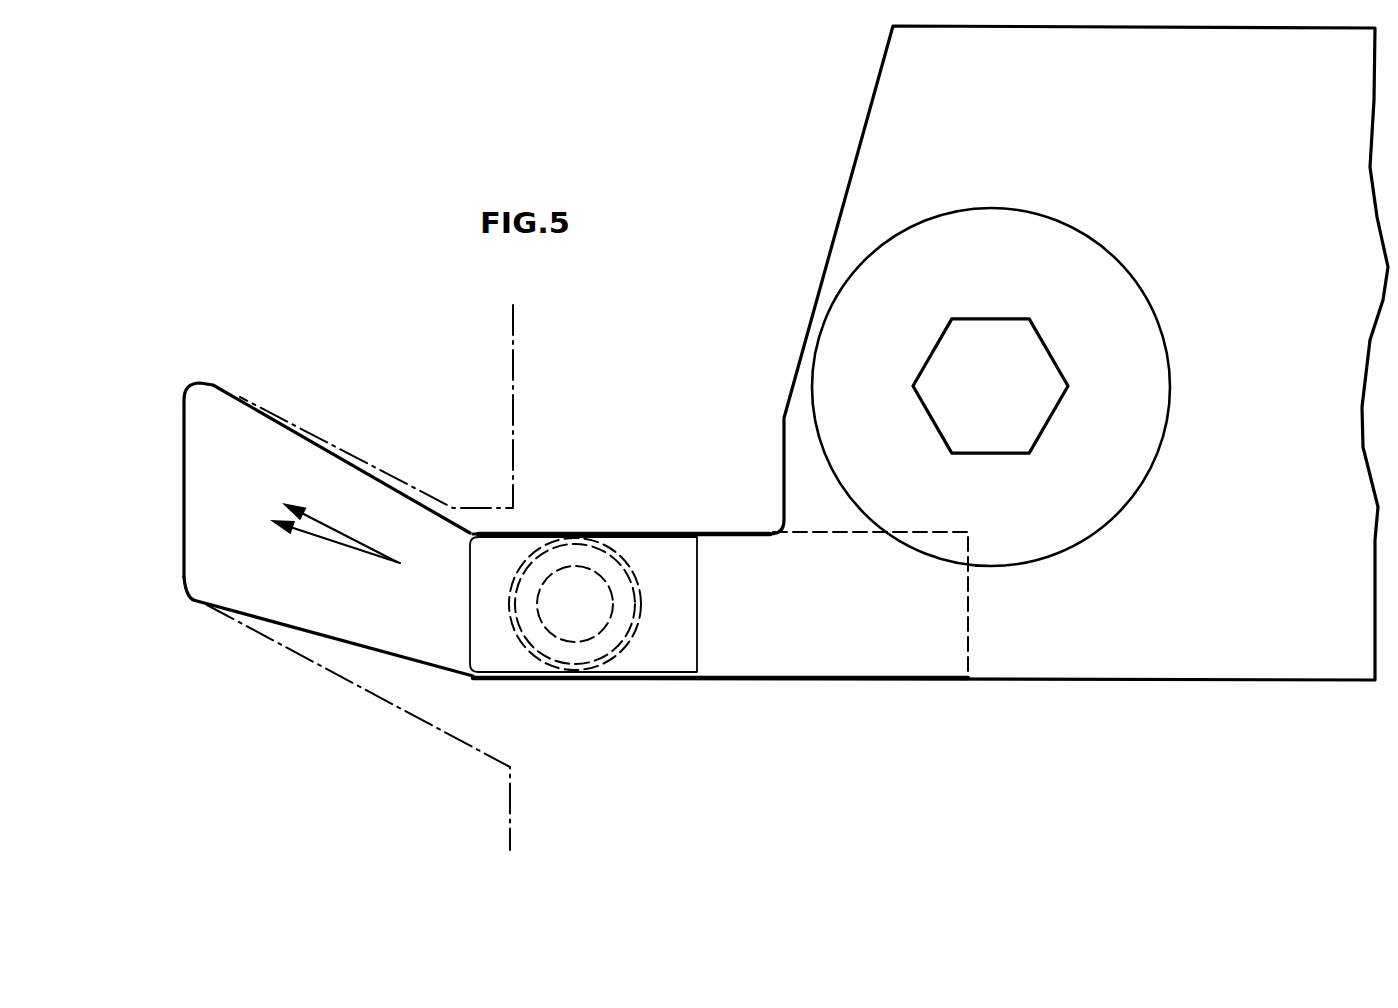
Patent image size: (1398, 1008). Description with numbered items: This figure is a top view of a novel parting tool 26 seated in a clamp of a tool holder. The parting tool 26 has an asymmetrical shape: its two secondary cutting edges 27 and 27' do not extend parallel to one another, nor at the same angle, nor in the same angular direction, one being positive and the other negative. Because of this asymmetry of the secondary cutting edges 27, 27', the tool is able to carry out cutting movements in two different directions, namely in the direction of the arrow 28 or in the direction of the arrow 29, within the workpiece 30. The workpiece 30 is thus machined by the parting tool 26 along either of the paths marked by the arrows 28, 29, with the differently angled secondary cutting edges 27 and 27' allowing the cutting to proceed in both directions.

The parting tool 26 is at (443, 552).
The secondary cutting edge 27 is at (411, 406).
The secondary cutting edge 27' is at (358, 727).
The arrow 28 is at (320, 538).
The arrow 29 is at (372, 555).
The workpiece 30 is at (383, 369).